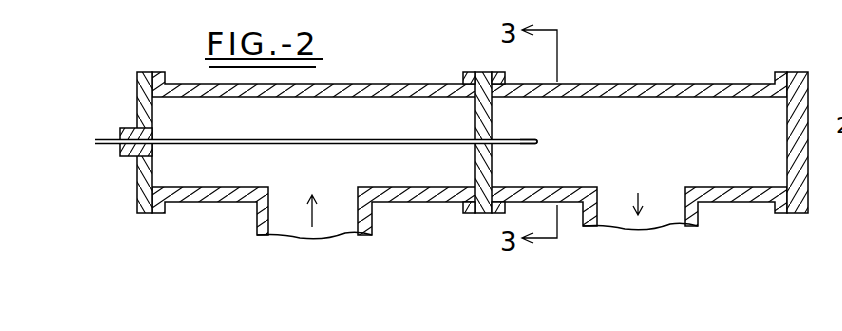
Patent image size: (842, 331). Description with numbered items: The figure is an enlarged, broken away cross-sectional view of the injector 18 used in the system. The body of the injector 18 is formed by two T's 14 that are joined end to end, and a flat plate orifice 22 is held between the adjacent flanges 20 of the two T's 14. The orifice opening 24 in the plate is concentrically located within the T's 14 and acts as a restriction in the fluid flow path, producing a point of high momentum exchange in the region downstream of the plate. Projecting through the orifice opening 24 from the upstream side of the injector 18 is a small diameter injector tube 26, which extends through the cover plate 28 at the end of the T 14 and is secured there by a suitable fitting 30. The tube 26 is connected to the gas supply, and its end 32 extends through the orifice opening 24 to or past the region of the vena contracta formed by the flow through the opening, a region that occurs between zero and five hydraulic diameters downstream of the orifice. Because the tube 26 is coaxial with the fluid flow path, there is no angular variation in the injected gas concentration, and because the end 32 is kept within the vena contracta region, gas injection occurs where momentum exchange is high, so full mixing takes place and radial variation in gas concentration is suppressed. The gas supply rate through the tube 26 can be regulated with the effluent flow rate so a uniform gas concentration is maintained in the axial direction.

The T 14 is at (377, 84).
The injector 18 is at (126, 193).
The flange 20 is at (468, 72).
The flat plate orifice 22 is at (483, 209).
The orifice opening 24 is at (483, 137).
The injector tube 26 is at (254, 141).
The cover plate 28 is at (140, 82).
The fitting 30 is at (126, 128).
The end of the injector tube 32 is at (540, 143).